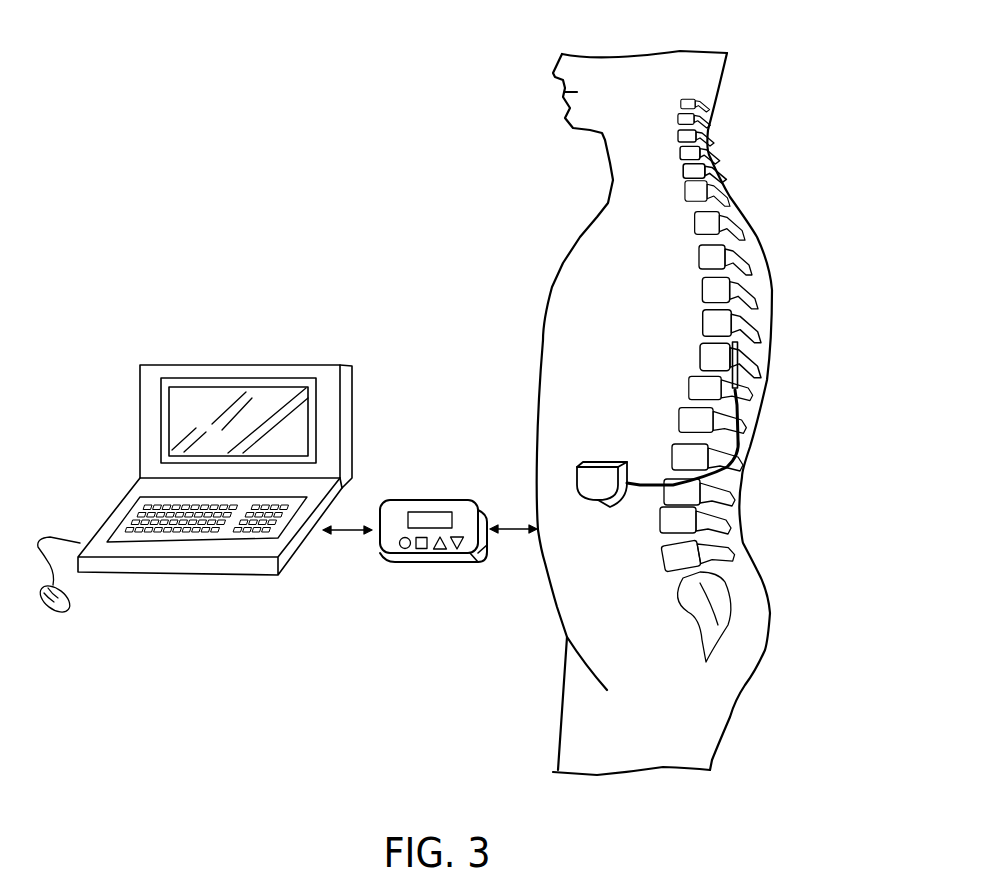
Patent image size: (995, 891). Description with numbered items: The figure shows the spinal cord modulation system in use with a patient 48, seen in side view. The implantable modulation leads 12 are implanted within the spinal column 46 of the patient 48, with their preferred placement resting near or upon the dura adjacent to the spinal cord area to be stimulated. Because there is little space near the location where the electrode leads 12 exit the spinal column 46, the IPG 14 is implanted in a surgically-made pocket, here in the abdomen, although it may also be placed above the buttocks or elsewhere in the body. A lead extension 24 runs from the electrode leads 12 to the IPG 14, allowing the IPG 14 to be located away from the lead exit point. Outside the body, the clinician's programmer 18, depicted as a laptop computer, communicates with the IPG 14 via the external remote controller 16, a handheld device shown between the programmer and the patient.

The implantable modulation lead 12 is at (745, 371).
The implantable modulator (IPG) 14 is at (600, 490).
The external remote controller (RC) 16 is at (452, 484).
The clinician's programmer (CP) 18 is at (225, 358).
The lead extension 24 is at (740, 440).
The spinal column 46 is at (700, 343).
The patient 48 is at (551, 287).